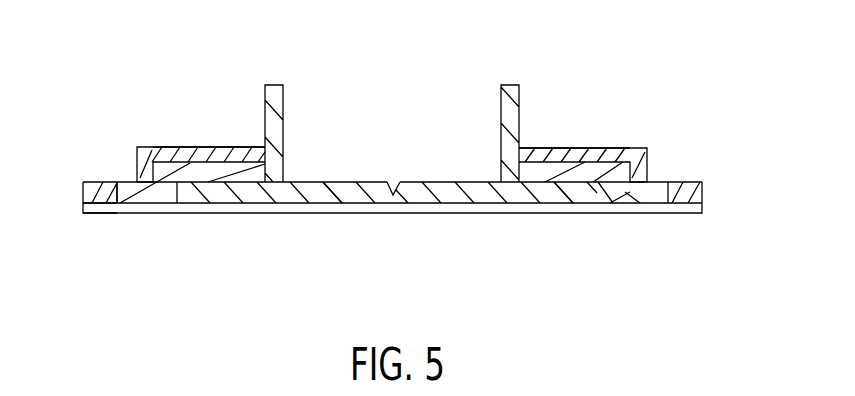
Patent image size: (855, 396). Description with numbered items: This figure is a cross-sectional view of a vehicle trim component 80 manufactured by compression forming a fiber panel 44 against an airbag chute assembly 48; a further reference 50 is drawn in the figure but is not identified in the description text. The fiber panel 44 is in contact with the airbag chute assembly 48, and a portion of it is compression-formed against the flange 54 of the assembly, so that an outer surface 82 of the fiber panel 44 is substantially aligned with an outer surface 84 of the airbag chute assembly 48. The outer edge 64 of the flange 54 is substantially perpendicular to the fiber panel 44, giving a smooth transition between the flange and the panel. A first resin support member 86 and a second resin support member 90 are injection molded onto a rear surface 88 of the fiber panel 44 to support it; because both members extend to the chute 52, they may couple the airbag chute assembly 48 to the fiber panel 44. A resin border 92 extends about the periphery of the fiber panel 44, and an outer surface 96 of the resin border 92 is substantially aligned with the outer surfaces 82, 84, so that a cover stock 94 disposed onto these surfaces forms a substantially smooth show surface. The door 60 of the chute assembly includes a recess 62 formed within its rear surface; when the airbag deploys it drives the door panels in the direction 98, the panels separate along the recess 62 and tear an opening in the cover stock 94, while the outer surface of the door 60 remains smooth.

The fiber panel 44 is at (157, 196).
The airbag chute assembly 48 is at (425, 135).
The assembly 50 is at (373, 103).
The chute 52 is at (512, 85).
The flange 54 is at (562, 198).
The door 60 is at (343, 192).
The recess 62 is at (390, 180).
The outer edge 64 is at (625, 205).
The vehicle trim component 80 is at (687, 132).
The outer surface 82 is at (135, 205).
The outer surface 84 is at (220, 200).
The first resin support member 86 is at (203, 147).
The rear surface 88 is at (172, 147).
The second resin support member 90 is at (562, 152).
The resin border 92 is at (93, 180).
The cover stock 94 is at (97, 214).
The outer surface 96 is at (675, 203).
The direction 98 is at (297, 310).